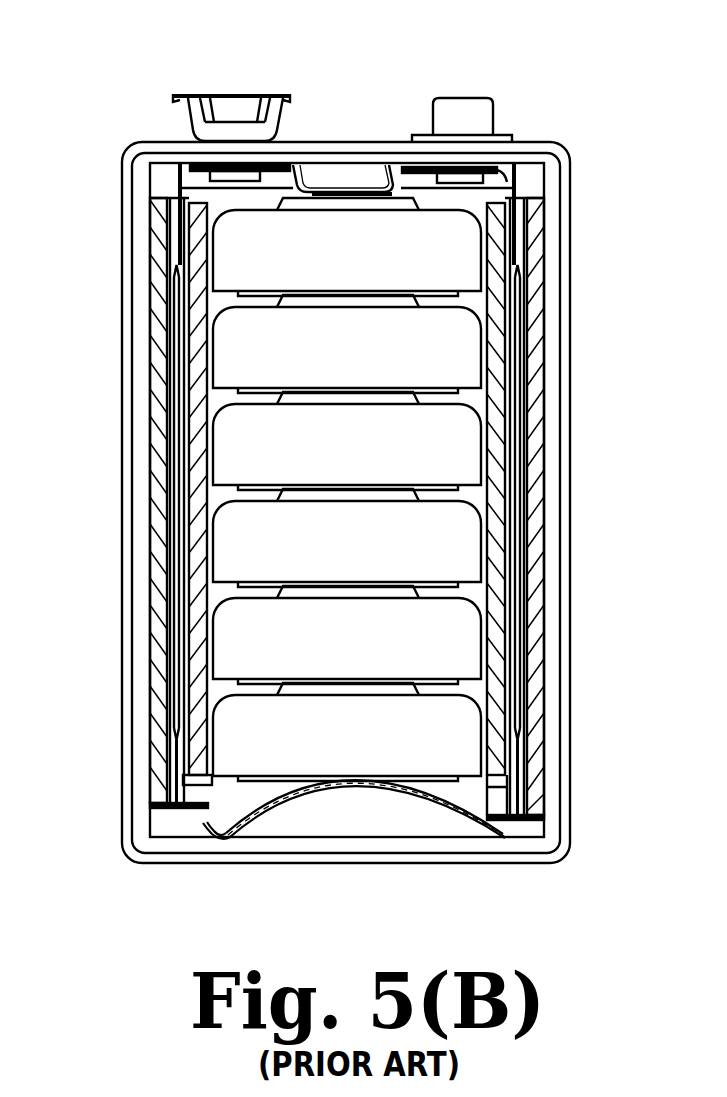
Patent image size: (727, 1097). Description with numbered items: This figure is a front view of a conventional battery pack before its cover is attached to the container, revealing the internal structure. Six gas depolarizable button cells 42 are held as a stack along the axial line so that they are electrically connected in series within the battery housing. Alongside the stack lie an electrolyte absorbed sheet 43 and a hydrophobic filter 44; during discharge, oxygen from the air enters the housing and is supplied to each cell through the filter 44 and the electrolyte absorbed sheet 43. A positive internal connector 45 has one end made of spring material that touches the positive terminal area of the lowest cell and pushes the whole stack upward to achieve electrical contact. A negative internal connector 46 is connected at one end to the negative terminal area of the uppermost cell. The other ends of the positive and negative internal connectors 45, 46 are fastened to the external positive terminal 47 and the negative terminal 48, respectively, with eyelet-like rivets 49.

The gas depolarizable button cells 42 is at (253, 253).
The electrolyte absorbed sheet 43 is at (198, 342).
The hydrophobic filter 44 is at (158, 463).
The positive internal connector 45 is at (513, 817).
The negative internal connector 46 is at (293, 170).
The external positive terminal 47 is at (473, 117).
The negative terminal 48 is at (228, 117).
The eyelet-like rivets 49 is at (197, 167).